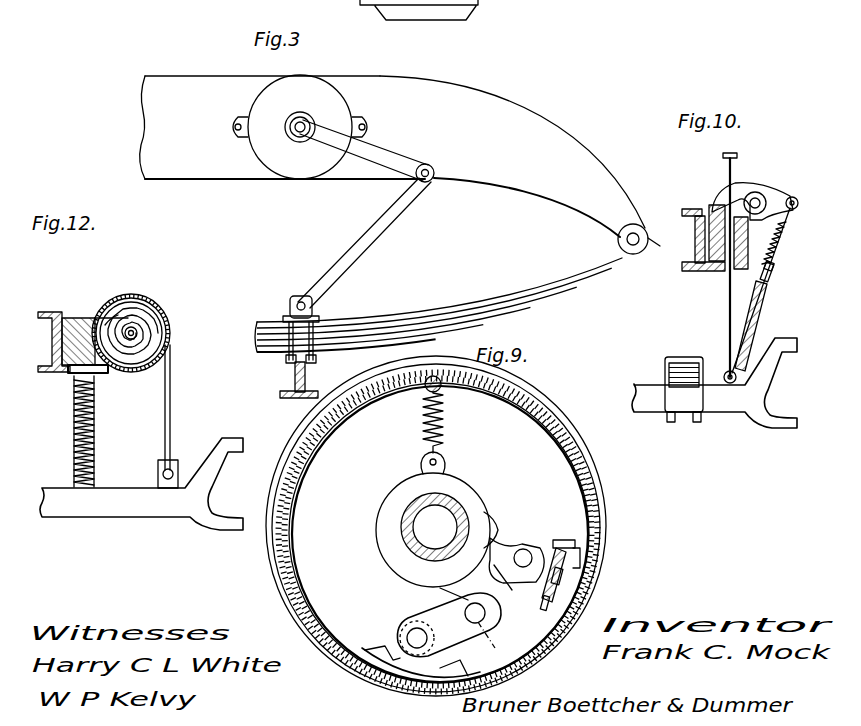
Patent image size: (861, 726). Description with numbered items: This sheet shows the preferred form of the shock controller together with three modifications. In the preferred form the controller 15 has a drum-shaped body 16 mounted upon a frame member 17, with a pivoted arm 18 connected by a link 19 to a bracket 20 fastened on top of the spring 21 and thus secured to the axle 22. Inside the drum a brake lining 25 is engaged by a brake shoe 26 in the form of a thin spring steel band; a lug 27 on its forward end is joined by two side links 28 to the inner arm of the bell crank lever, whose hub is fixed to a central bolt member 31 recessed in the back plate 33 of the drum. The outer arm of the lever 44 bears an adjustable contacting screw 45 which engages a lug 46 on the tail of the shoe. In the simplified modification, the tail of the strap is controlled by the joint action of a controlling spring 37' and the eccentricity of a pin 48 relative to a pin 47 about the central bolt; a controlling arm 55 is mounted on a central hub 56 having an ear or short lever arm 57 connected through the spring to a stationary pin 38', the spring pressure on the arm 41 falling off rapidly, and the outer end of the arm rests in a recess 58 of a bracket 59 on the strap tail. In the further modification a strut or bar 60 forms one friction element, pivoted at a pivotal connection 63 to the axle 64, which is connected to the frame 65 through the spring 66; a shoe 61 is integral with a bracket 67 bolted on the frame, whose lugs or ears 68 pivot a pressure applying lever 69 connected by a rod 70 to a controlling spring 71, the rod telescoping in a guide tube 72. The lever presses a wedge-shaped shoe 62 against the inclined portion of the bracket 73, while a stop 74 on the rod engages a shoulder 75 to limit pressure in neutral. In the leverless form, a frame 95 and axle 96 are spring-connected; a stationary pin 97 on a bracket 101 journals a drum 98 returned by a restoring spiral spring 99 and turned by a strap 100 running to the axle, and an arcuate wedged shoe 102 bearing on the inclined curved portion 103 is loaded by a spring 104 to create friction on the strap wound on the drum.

In FIG. 3, the controller 15 is at (250, 186).
In FIG. 3, the drum-shaped body 16 is at (312, 181).
In FIG. 9, the drum-shaped body 16 is at (602, 542).
In FIG. 3, the frame member 17 is at (460, 98).
In FIG. 3, the pivoted arm 18 is at (398, 156).
In FIG. 3, the link 19 is at (352, 252).
In FIG. 3, the bracket 20 is at (288, 306).
In FIG. 3, the spring 21 is at (398, 320).
In FIG. 3, the axle 22 is at (310, 380).
In FIG. 9, the brake lining 25 is at (604, 506).
In FIG. 9, the brake shoe 26 is at (578, 494).
In FIG. 9, the lug 27 is at (382, 650).
In FIG. 9, the side links 28 is at (460, 634).
In FIG. 9, the central bolt member 31 is at (452, 520).
In FIG. 9, the back plate 33 is at (580, 532).
In FIG. 9, the controlling spring 37' is at (409, 422).
In FIG. 9, the stationary pin 38' is at (455, 405).
In FIG. 9, the arm 41 is at (504, 562).
In FIG. 9, the outer arm of the lever 44 is at (570, 572).
In FIG. 9, the adjustable contacting screw 45 is at (582, 594).
In FIG. 9, the lug 46 is at (600, 556).
In FIG. 9, the pin 47 is at (487, 614).
In FIG. 9, the pin 48 is at (417, 649).
In FIG. 9, the controlling arm 55 is at (495, 520).
In FIG. 9, the central hub 56 is at (385, 522).
In FIG. 9, the ear or short lever arm 57 is at (446, 466).
In FIG. 9, the recess 58 is at (508, 540).
In FIG. 9, the bracket 59 is at (448, 594).
In FIG. 10, the strut or bar 60 is at (726, 330).
In FIG. 10, the shoe 61 is at (754, 243).
In FIG. 10, the shoe 62 is at (712, 210).
In FIG. 10, the pivotal connection 63 is at (740, 374).
In FIG. 10, the axle 64 is at (772, 420).
In FIG. 10, the frame 65 is at (665, 245).
In FIG. 10, the spring 66 is at (684, 357).
In FIG. 10, the bracket 67 is at (708, 272).
In FIG. 10, the lugs or ears 68 is at (760, 192).
In FIG. 10, the pressure applying lever 69 is at (802, 188).
In FIG. 10, the rod 70 is at (792, 218).
In FIG. 10, the controlling spring 71 is at (784, 248).
In FIG. 10, the tube 72 is at (780, 312).
In FIG. 10, the portion of the bracket 73 is at (698, 238).
In FIG. 10, the stop 74 is at (775, 276).
In FIG. 10, the shoulder 75 is at (760, 285).
In FIG. 12, the frame 95 is at (50, 312).
In FIG. 12, the axle 96 is at (118, 518).
In FIG. 12, the stationary pin 97 is at (150, 335).
In FIG. 12, the drum 98 is at (165, 345).
In FIG. 12, the restoring spiral spring 99 is at (162, 318).
In FIG. 12, the strap 100 is at (172, 418).
In FIG. 12, the bracket 101 is at (125, 298).
In FIG. 12, the arcuate wedged shoe 102 is at (100, 372).
In FIG. 12, the inclined curved portion 103 is at (80, 318).
In FIG. 12, the spring 104 is at (96, 436).